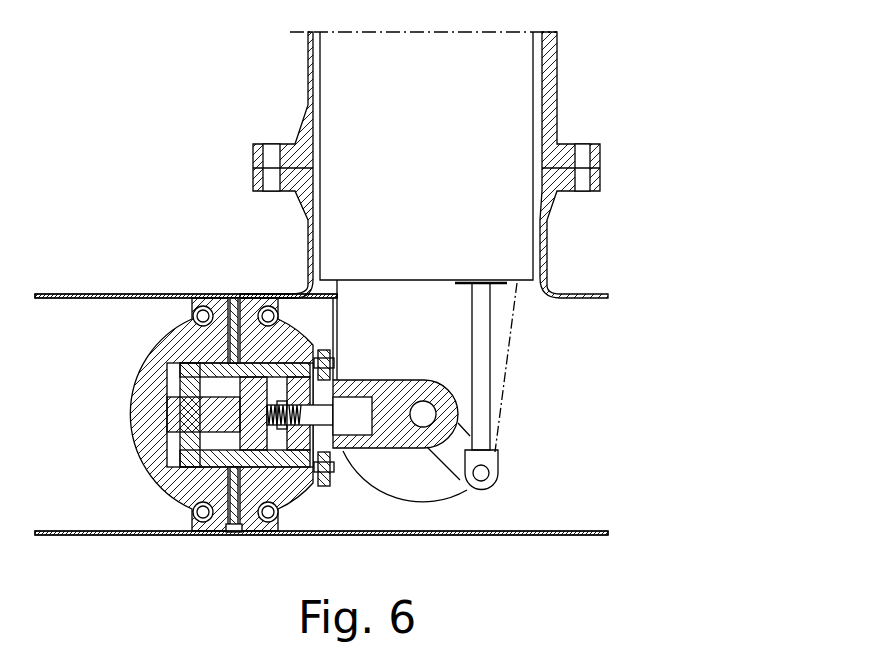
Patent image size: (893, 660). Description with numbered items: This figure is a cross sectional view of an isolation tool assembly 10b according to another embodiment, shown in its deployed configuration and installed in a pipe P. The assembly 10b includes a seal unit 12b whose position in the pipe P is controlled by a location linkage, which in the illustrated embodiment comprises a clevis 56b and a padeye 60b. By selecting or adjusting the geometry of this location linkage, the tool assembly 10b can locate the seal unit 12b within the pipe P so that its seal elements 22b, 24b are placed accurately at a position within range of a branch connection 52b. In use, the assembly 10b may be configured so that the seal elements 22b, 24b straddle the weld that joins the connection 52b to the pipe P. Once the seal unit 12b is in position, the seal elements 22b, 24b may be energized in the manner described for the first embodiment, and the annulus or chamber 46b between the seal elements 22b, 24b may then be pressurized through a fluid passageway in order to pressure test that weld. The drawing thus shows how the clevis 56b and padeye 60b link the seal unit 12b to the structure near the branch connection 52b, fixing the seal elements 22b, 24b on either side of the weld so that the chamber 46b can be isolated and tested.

The pipe P is at (72, 294).
The isolation tool assembly 10b is at (578, 458).
The seal unit 12b is at (150, 503).
The seal element 22b is at (205, 298).
The seal element 24b is at (252, 294).
The annulus or chamber 46b is at (235, 535).
The branch connection 52b is at (563, 268).
The clevis 56b is at (400, 430).
The padeye 60b is at (433, 335).